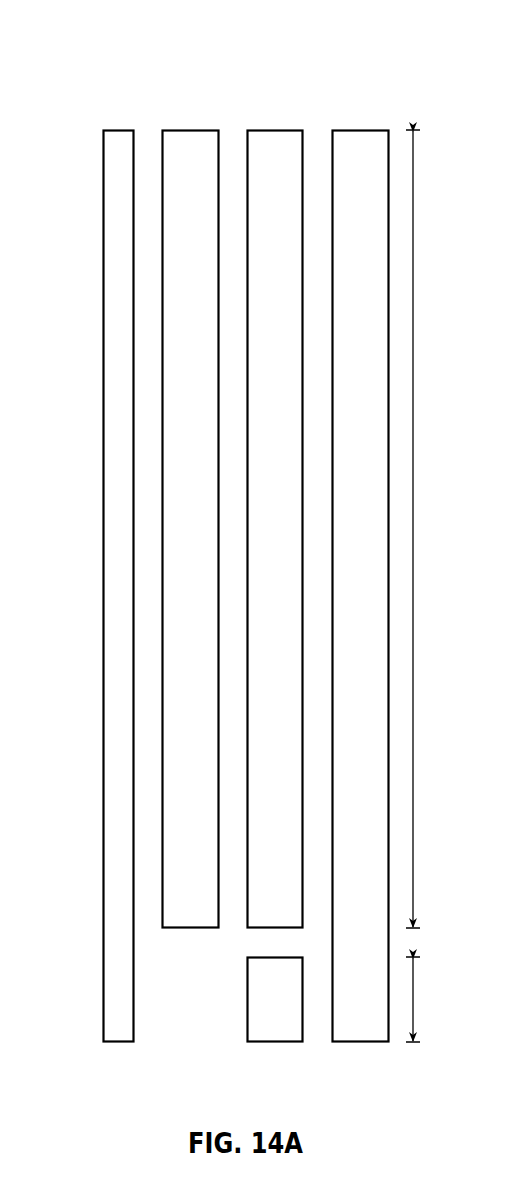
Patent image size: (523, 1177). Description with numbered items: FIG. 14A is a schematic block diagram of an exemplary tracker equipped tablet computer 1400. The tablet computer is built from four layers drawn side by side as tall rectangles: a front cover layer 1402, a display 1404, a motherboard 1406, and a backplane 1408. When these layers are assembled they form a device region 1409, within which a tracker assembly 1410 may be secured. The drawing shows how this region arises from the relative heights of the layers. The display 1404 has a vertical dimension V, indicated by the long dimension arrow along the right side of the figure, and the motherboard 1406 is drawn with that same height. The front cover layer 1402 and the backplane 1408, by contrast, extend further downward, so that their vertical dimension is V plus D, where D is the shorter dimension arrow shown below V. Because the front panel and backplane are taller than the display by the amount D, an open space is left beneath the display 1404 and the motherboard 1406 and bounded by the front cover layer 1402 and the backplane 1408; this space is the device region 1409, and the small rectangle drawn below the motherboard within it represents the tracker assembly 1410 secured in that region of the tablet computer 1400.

The tracker equipped tablet computer 1400 is at (136, 44).
The front cover layer 1402 is at (118, 128).
The display 1404 is at (190, 129).
The motherboard 1406 is at (275, 129).
The backplane 1408 is at (361, 129).
The device region 1409 is at (191, 1036).
The tracker assembly 1410 is at (277, 1044).
The vertical dimension V is at (413, 530).
The additional vertical dimension D is at (413, 997).